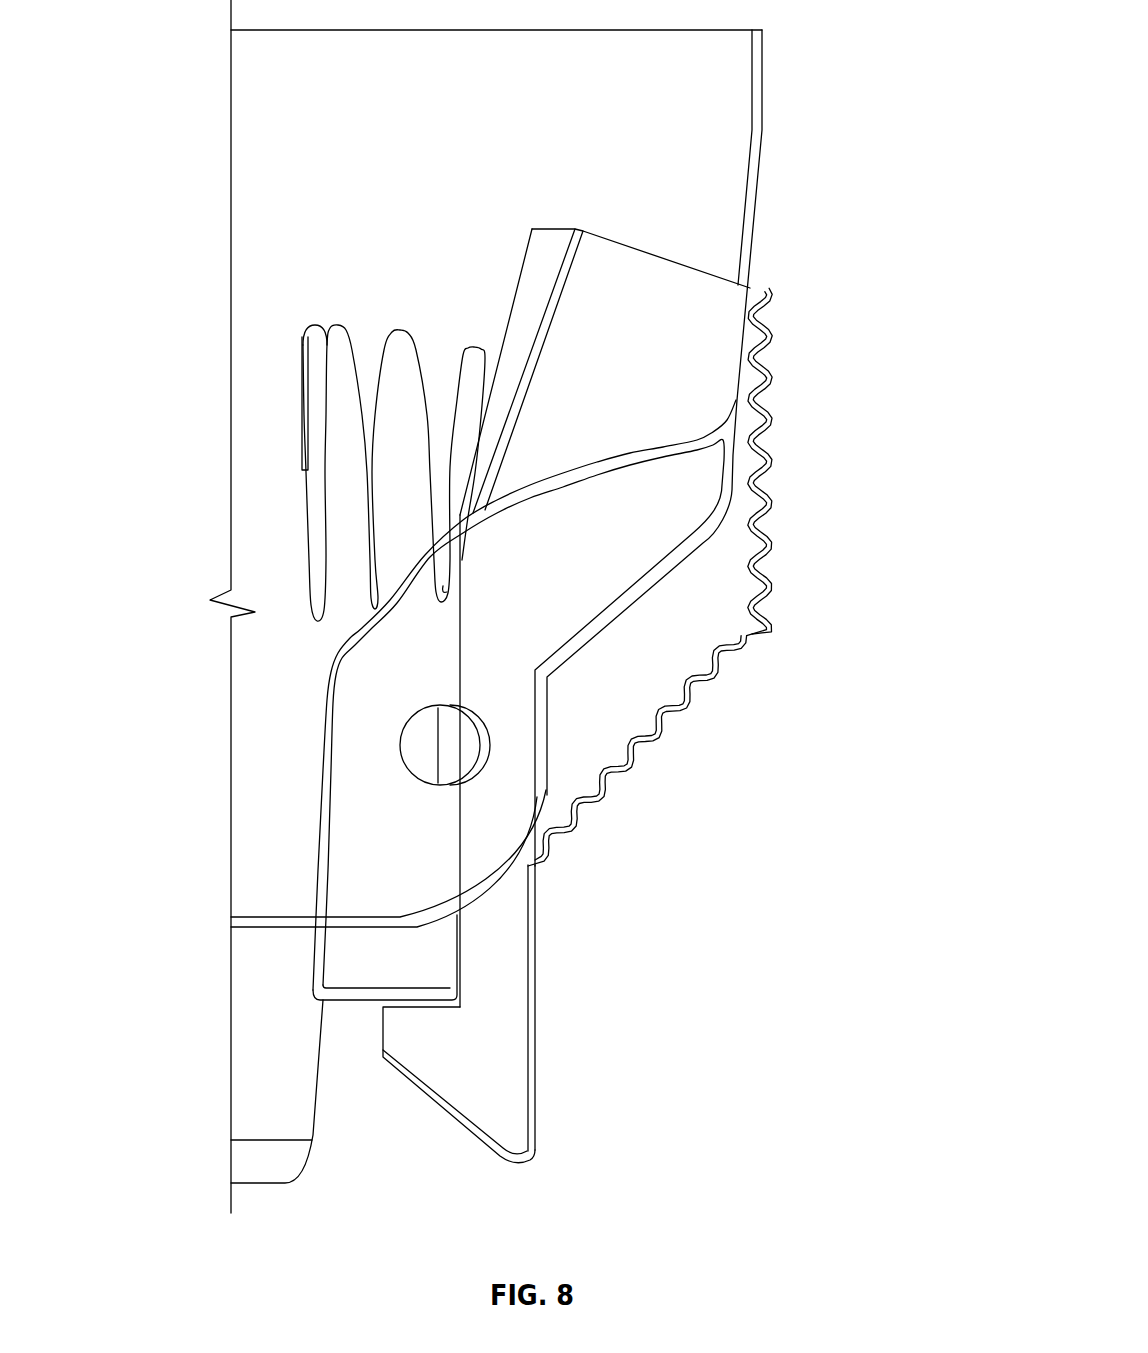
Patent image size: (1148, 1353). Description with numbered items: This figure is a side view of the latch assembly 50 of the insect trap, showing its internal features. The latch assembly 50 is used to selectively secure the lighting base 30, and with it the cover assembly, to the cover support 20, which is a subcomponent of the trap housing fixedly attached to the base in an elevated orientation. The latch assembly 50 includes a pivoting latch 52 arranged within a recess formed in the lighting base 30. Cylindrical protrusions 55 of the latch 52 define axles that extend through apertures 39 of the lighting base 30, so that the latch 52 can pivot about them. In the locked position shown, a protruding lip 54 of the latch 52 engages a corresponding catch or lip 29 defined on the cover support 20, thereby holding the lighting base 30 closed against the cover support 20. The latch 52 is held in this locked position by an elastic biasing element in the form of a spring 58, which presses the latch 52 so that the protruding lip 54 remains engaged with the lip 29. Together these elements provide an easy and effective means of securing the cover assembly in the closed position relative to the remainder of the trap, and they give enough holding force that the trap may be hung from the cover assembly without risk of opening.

The lighting base 30 is at (728, 100).
The spring 58 is at (333, 338).
The cover support 20 is at (425, 721).
The catch or lip 29 is at (350, 967).
The protruding lip 54 is at (418, 1038).
The latch assembly 50 is at (800, 380).
The latch 52 is at (573, 735).
The apertures 39 is at (482, 722).
The cylindrical protrusions 55 is at (457, 762).